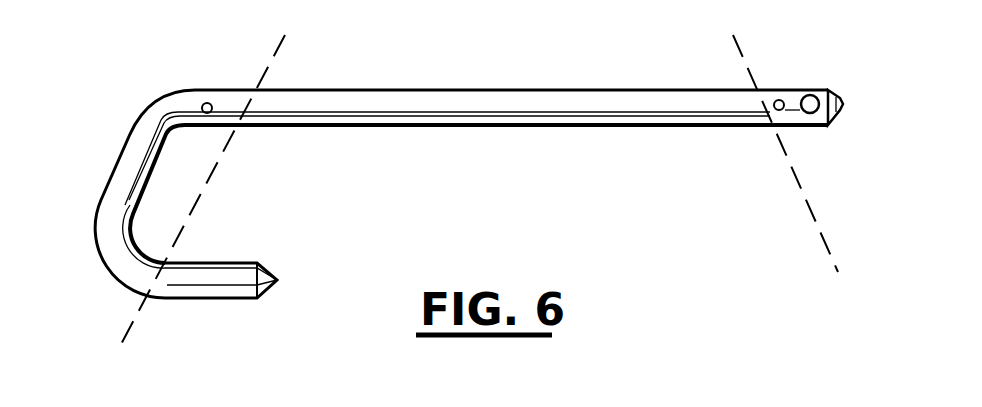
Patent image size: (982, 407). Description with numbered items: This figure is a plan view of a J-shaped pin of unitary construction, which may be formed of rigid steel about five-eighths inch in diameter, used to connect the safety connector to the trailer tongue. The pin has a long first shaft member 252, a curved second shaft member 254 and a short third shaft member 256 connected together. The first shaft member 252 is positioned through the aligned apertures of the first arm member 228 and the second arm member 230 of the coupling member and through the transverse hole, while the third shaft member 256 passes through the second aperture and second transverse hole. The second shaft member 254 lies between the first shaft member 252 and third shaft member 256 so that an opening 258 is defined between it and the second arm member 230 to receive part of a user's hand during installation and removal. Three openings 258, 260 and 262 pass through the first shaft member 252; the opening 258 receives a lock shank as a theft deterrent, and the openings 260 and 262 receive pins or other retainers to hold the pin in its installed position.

The first arm member 228 is at (815, 232).
The second arm member 230 is at (127, 335).
The first shaft member 252 is at (580, 90).
The second shaft member 254 is at (123, 152).
The third shaft member 256 is at (193, 300).
The opening 258 is at (810, 94).
The opening 260 is at (784, 111).
The opening 262 is at (207, 102).